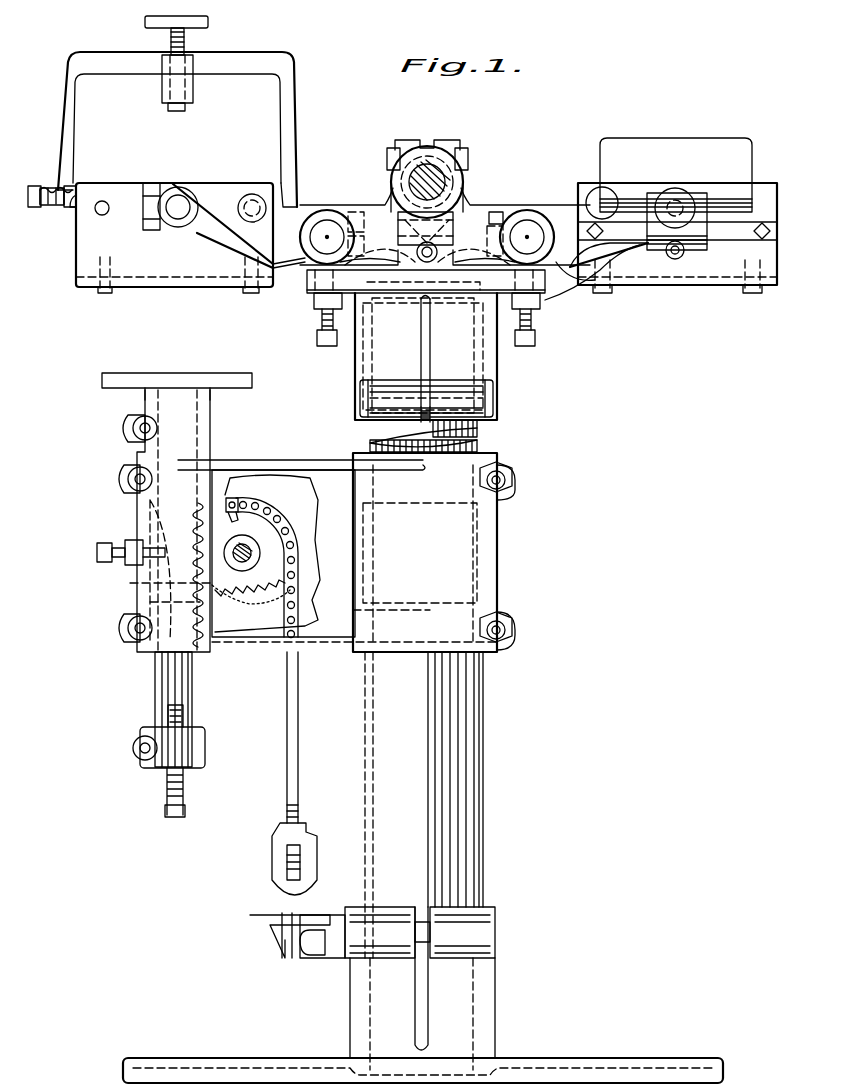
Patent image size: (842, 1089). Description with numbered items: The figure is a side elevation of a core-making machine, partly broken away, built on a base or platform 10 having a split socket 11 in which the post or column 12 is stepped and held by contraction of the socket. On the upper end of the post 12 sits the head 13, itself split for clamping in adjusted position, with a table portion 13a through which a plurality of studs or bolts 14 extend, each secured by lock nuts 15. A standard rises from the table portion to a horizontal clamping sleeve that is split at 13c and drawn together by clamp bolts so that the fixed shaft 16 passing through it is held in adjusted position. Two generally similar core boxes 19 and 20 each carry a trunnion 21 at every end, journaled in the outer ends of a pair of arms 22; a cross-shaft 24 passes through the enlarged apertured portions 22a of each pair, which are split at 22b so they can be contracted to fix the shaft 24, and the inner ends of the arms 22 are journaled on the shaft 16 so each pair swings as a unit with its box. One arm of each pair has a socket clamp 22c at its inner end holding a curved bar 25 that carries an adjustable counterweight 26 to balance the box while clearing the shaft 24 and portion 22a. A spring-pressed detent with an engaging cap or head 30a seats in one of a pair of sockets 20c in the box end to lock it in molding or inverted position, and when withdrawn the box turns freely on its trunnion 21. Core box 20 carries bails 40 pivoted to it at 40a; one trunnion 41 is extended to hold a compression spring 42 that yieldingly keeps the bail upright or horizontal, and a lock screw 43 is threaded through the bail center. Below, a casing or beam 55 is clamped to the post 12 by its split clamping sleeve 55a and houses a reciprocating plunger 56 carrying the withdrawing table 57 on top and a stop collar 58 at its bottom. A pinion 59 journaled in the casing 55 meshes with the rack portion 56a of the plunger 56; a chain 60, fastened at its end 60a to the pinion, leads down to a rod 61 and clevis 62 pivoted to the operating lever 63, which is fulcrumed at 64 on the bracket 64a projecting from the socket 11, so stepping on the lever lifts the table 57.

The base 10 is at (612, 1058).
The split socket 11 is at (496, 973).
The post 12 is at (486, 848).
The head 13 is at (498, 350).
The table portion 13a is at (555, 290).
The split of clamping sleeve 13c is at (425, 142).
The studs or bolts 14 is at (320, 343).
The lock nuts 15 is at (310, 300).
The fixed shaft 16 is at (446, 188).
The core box 19 is at (725, 280).
The core box 20 is at (130, 270).
The apertures or sockets 20c is at (106, 214).
The trunnion 21 is at (176, 212).
The arms 22 is at (200, 222).
The enlarged apertured portions 22a is at (312, 212).
The split 22b is at (512, 226).
The socket clamp 22c is at (446, 275).
The cross-shaft 24 is at (330, 232).
The bars 25 is at (580, 280).
The counterweights 26 is at (685, 143).
The engaging cap or head 30a is at (240, 222).
The bails 40 is at (110, 62).
The bail pivot 40a is at (74, 212).
The trunnion 41 is at (36, 207).
The spring 42 is at (50, 185).
The lock screw 43 is at (190, 47).
The casing or beam 55 is at (345, 650).
The clamping sleeve 55a is at (462, 657).
The reciprocating plunger 56 is at (150, 585).
The rack portion 56a is at (160, 680).
The withdrawing table 57 is at (145, 380).
The collar 58 is at (206, 750).
The pinion 59 is at (272, 540).
The chain 60 is at (300, 584).
The chain end 60a is at (238, 502).
The rod 61 is at (300, 757).
The clevis 62 is at (316, 855).
The operating lever 63 is at (300, 958).
The fulcrum 64 is at (270, 940).
The bracket 64a is at (335, 958).